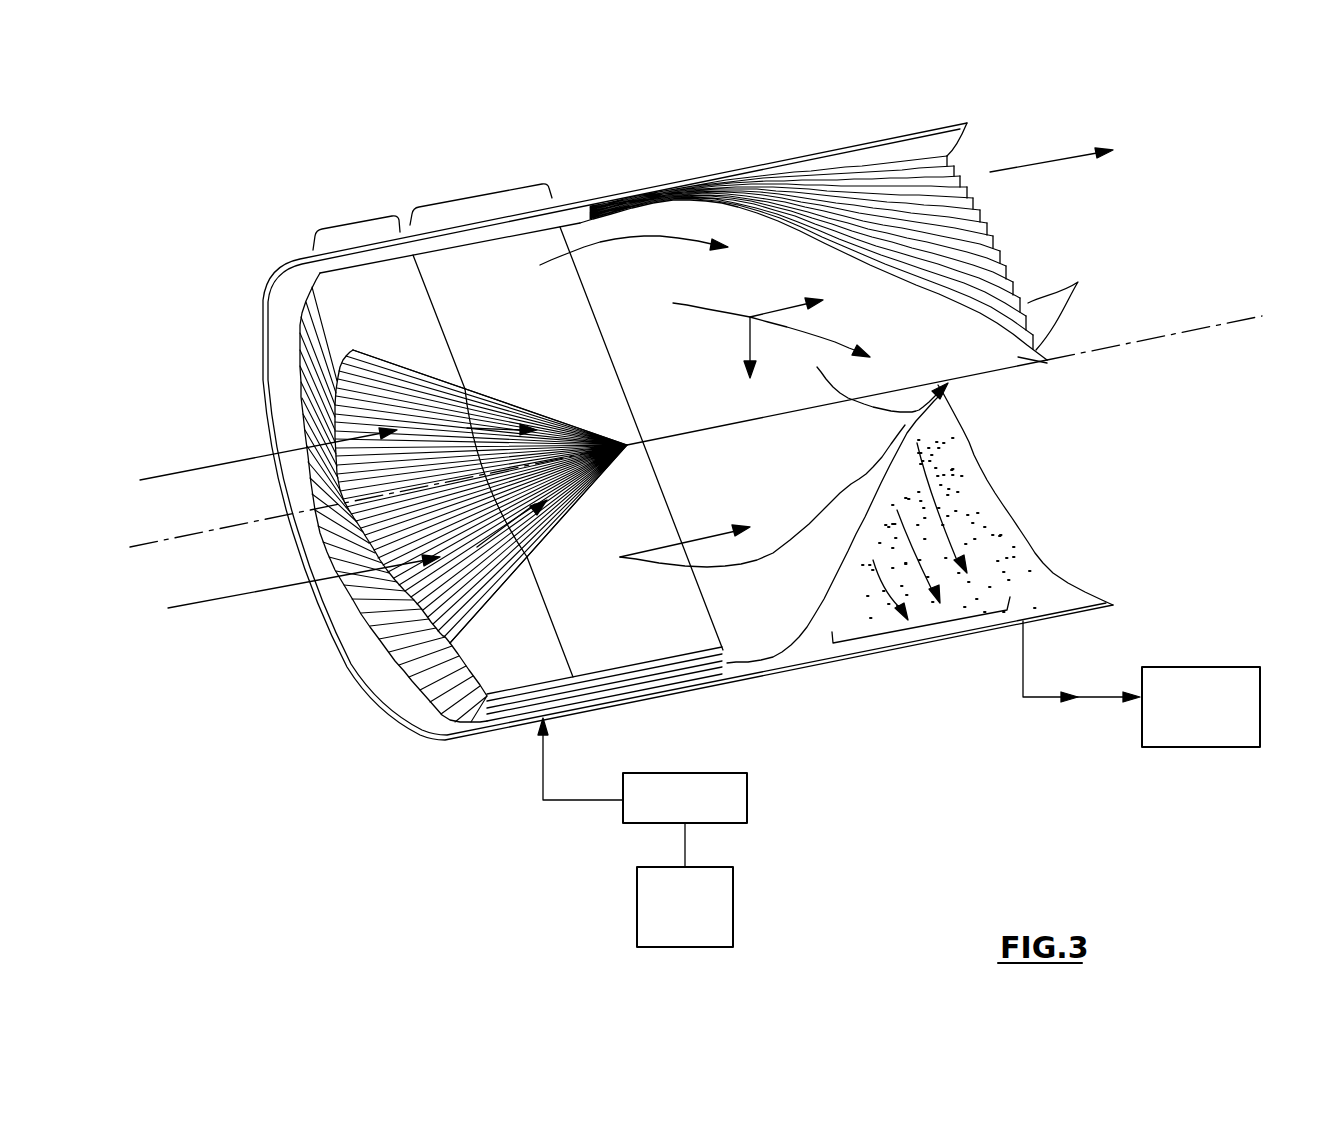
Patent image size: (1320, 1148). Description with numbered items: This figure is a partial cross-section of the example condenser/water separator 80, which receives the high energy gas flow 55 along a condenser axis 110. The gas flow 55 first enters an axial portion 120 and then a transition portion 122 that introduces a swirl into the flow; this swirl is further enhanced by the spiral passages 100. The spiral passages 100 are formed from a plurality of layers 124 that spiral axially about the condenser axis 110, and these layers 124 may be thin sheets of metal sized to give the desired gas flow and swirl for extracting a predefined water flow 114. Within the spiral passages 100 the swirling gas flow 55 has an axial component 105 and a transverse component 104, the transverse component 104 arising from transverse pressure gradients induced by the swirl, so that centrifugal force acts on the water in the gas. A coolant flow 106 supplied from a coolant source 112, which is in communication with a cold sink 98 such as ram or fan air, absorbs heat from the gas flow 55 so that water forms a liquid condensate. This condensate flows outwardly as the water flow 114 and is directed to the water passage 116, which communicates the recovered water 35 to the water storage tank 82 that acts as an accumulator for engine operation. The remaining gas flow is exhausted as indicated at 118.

The condenser/water separator 80 is at (222, 214).
The spiral passages 100 is at (763, 147).
The axial portion 120 is at (357, 223).
The transition portion 122 is at (483, 197).
The exhausted gas flow 118 is at (1030, 163).
The layers 124 is at (1037, 307).
The condenser axis 110 is at (1203, 330).
The axial component 105 is at (790, 302).
The transverse component 104 is at (750, 350).
The high energy gas flow 55 is at (183, 472).
The water flow 114 is at (936, 632).
The water passage 116 is at (1023, 655).
The water storage tank 82 is at (1218, 667).
The water 35 is at (1072, 699).
The coolant source 112 is at (666, 773).
The coolant flow 106 is at (543, 768).
The cold sink 98 is at (733, 925).